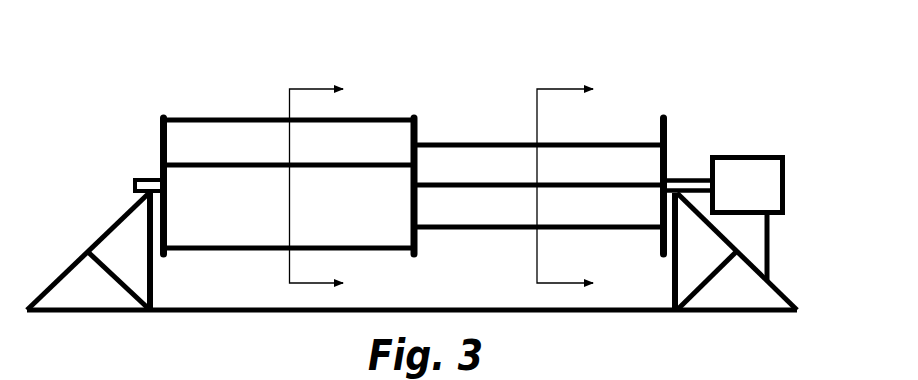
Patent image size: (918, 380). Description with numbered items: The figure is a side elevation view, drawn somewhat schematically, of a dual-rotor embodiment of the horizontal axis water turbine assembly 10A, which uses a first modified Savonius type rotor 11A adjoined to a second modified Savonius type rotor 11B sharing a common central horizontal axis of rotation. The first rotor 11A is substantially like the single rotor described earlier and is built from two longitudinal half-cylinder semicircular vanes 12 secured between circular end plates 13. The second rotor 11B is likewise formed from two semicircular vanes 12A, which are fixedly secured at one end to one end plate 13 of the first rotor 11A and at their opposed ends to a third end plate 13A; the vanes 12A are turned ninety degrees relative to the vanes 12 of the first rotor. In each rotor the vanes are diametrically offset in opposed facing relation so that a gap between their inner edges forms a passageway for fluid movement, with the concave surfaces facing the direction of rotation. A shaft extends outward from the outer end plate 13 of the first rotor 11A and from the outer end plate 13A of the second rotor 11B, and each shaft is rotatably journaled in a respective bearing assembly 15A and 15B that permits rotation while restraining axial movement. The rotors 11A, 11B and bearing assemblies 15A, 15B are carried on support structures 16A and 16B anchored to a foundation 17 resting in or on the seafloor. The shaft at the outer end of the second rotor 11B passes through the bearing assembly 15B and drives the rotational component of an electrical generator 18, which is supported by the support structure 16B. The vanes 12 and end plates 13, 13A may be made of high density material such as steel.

The horizontal axis water turbine assembly 10A is at (649, 98).
The first modified Savonius type rotor 11A is at (250, 115).
The second modified Savonius type rotor 11B is at (500, 138).
The semicircular vanes 12 is at (255, 144).
The semicircular vanes 12A is at (493, 176).
The end plate 13 is at (158, 132).
The third end plate 13A is at (668, 128).
The bearing assembly 15A is at (147, 176).
The bearing assembly 15B is at (673, 177).
The support structure 16A is at (95, 242).
The support structure 16B is at (783, 288).
The foundation 17 is at (445, 308).
The electrical generator 18 is at (760, 190).